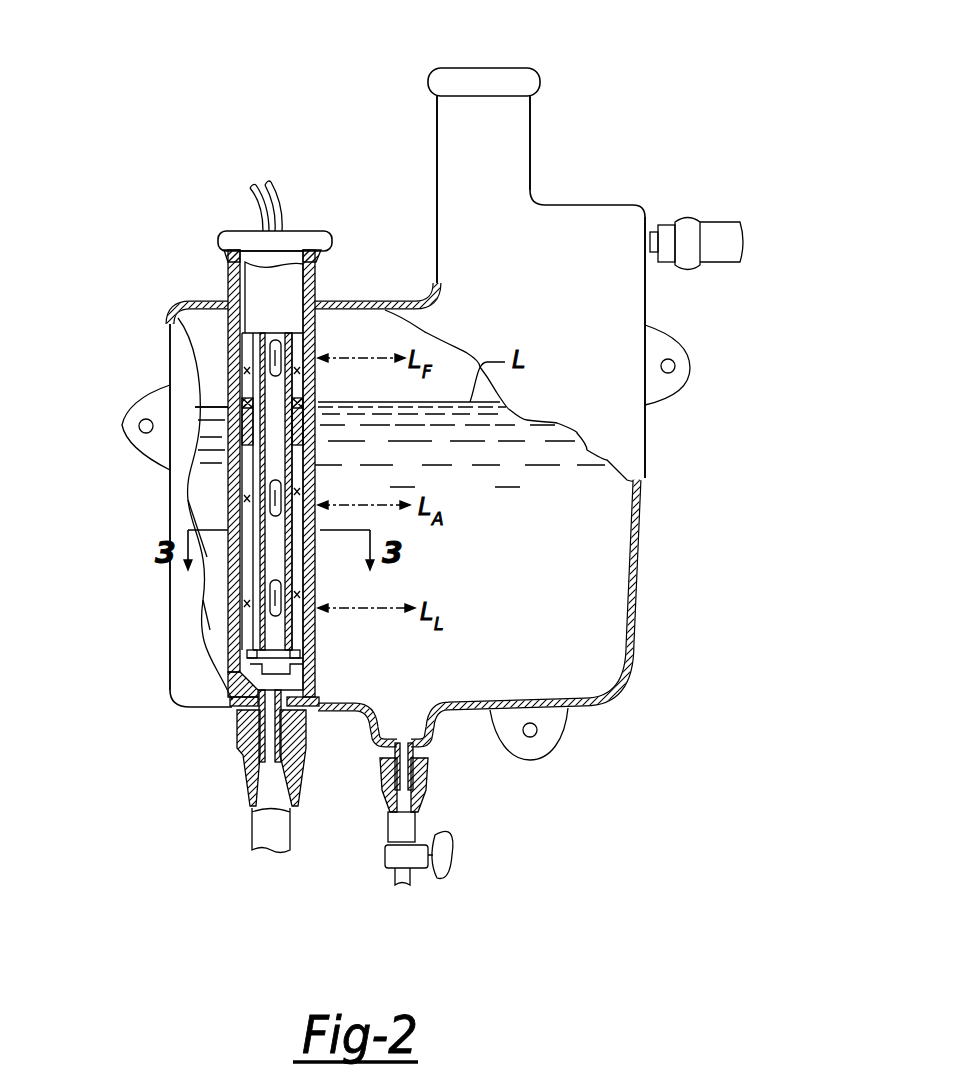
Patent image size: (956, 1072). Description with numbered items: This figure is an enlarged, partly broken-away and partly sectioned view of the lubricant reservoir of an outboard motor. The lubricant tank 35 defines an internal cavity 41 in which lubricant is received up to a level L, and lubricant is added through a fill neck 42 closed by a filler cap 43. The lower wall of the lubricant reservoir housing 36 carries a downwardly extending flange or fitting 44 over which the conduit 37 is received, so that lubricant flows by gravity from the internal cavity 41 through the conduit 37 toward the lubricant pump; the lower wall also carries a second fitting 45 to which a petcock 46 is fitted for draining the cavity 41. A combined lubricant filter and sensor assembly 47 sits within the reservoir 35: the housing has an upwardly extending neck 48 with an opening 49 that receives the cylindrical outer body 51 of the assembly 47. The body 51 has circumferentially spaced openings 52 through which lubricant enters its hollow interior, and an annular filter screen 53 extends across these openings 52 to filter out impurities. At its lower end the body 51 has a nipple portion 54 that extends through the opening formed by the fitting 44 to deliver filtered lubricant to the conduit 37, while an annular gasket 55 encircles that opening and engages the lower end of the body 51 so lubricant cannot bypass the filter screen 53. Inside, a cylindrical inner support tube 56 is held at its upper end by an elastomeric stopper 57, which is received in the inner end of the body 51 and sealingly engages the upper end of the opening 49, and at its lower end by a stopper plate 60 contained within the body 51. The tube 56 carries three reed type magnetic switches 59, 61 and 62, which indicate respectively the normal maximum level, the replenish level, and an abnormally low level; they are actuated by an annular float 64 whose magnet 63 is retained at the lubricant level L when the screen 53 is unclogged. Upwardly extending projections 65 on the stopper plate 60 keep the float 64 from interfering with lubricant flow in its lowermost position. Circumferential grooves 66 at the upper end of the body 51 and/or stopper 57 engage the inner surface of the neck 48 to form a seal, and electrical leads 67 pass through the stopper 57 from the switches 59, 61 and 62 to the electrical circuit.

The lubricant tank 35 is at (585, 215).
The lubricant reservoir housing 36 is at (630, 432).
The conduit 37 is at (262, 833).
The internal cavity 41 is at (600, 578).
The fill neck 42 is at (520, 150).
The filler cap 43 is at (512, 75).
The flange or fitting 44 is at (250, 775).
The second fitting 45 is at (422, 752).
The petcock 46 is at (447, 840).
The combined lubricant filter and sensor assembly 47 is at (222, 340).
The upwardly extending neck 48 is at (250, 260).
The opening 49 is at (232, 235).
The cylindrical outer body 51 is at (317, 378).
The circumferentially spaced openings 52 is at (240, 590).
The annular filter screen 53 is at (240, 515).
The nipple portion 54 is at (255, 785).
The annular gasket 55 is at (315, 703).
The cylindrical inner support tube 56 is at (292, 543).
The elastomeric stopper 57 is at (312, 238).
The reed type magnetic switch 59 is at (290, 365).
The stopper plate 60 is at (300, 668).
The reed type magnetic switch 61 is at (282, 487).
The reed type magnetic switch 62 is at (313, 593).
The magnet 63 is at (248, 420).
The annular float 64 is at (245, 435).
The upwardly extending projections 65 is at (262, 654).
The circumferential grooves 66 is at (318, 315).
The electrical leads 67 is at (282, 185).